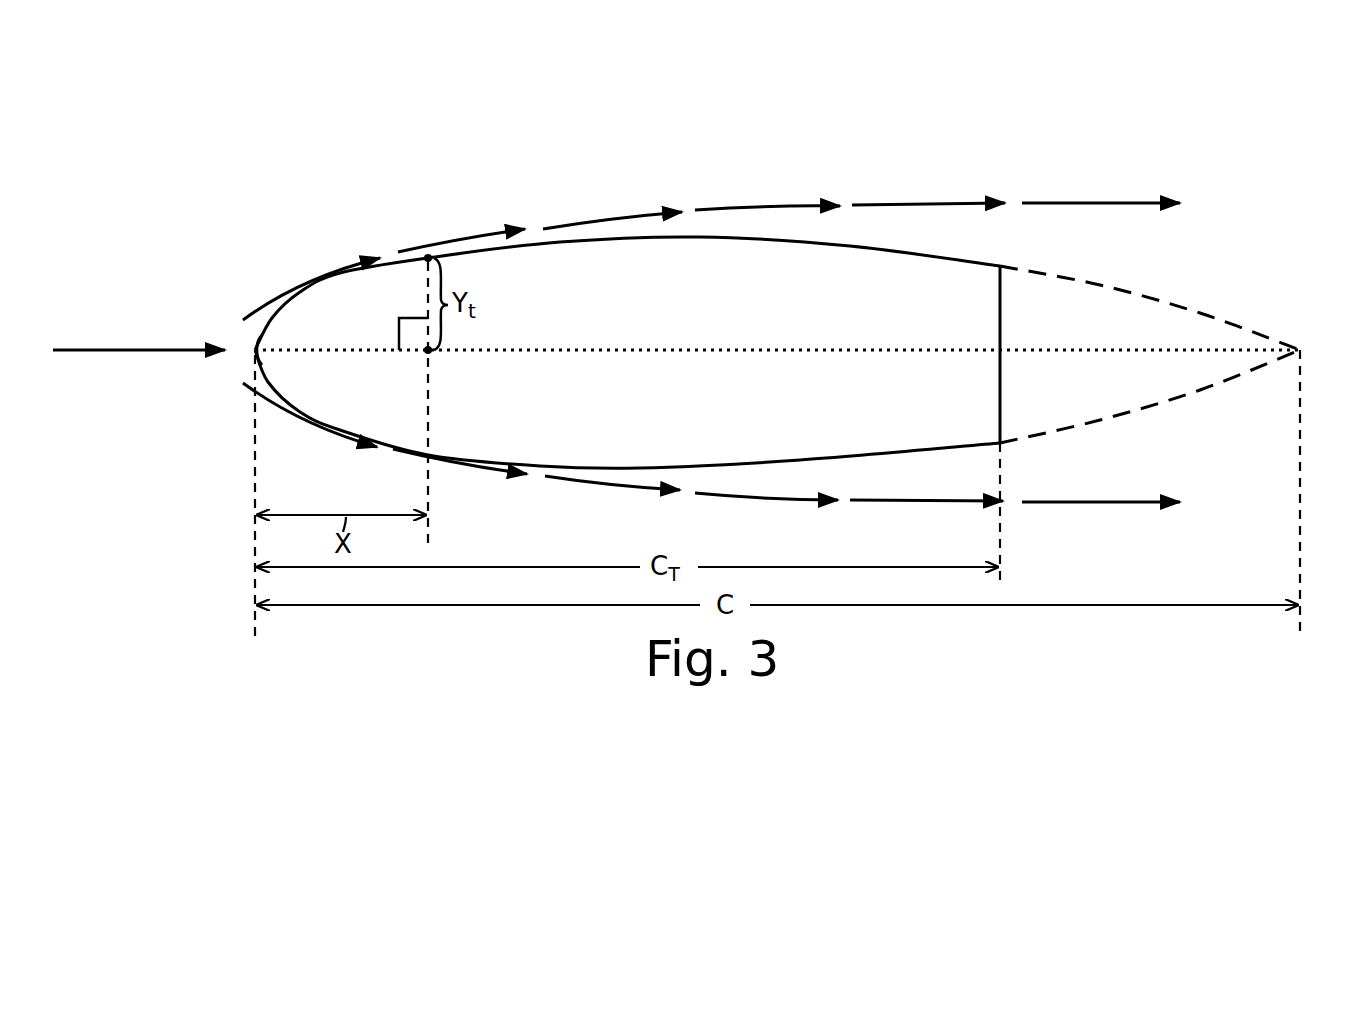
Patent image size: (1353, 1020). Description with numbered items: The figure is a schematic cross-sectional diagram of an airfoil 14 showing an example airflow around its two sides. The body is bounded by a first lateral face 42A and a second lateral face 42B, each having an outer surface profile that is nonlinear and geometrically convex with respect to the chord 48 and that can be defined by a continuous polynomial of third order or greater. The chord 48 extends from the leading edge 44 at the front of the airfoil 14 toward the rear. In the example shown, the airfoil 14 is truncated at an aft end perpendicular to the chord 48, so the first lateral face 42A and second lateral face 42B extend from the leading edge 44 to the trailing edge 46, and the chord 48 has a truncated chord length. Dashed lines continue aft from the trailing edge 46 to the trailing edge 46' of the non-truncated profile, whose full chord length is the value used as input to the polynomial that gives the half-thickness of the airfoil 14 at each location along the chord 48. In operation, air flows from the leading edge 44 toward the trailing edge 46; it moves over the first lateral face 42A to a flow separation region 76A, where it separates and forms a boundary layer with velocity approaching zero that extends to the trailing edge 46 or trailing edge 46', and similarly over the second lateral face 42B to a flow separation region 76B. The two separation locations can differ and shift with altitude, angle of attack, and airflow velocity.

The airfoil 14 is at (687, 190).
The leading edge 44 is at (250, 346).
The trailing edge 46 is at (1045, 405).
The trailing edge 46' is at (1176, 452).
The chord 48 is at (752, 349).
The first lateral face 42A is at (902, 464).
The second lateral face 42B is at (880, 245).
The flow separation region 76A is at (583, 486).
The flow separation region 76B is at (532, 235).